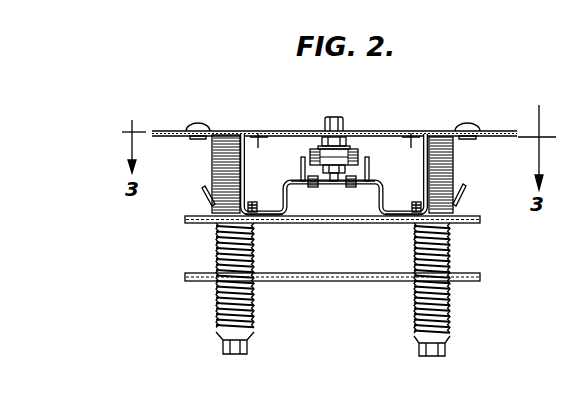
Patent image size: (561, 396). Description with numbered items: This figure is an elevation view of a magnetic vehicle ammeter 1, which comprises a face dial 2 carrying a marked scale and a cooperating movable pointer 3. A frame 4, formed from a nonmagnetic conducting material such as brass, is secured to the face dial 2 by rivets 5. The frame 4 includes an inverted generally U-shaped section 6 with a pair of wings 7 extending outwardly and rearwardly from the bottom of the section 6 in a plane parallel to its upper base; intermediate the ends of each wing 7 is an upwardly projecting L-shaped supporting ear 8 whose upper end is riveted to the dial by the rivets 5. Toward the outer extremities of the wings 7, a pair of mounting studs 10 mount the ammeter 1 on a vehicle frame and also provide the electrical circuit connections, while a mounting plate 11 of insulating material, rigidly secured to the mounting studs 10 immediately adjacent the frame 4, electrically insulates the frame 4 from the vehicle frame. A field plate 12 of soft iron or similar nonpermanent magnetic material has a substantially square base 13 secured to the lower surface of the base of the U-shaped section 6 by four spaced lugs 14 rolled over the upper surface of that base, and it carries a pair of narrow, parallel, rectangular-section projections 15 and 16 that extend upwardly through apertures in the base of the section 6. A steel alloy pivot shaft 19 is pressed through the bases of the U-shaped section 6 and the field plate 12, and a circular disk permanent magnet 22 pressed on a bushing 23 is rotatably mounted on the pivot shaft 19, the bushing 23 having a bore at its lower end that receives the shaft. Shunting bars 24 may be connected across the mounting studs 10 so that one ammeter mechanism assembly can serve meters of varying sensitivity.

The ammeter 1 is at (178, 244).
The face dial 2 is at (238, 133).
The movable pointer 3 is at (340, 116).
The frame 4 is at (463, 158).
The rivets 5 is at (468, 126).
The inverted generally U-shaped section 6 is at (384, 183).
The wings 7 is at (261, 212).
The L-shaped supporting ear 8 is at (215, 149).
The mounting studs 10 is at (256, 306).
The mounting plate 11 is at (481, 224).
The field plate 12 is at (284, 157).
The substantially square base 13 is at (352, 188).
The lugs 14 is at (313, 188).
The projection 15 is at (298, 168).
The projection 16 is at (370, 163).
The pivot shaft 19 is at (334, 182).
The circular disk permanent magnet 22 is at (354, 146).
The bushing 23 is at (324, 147).
The shunting bars 24 is at (344, 283).